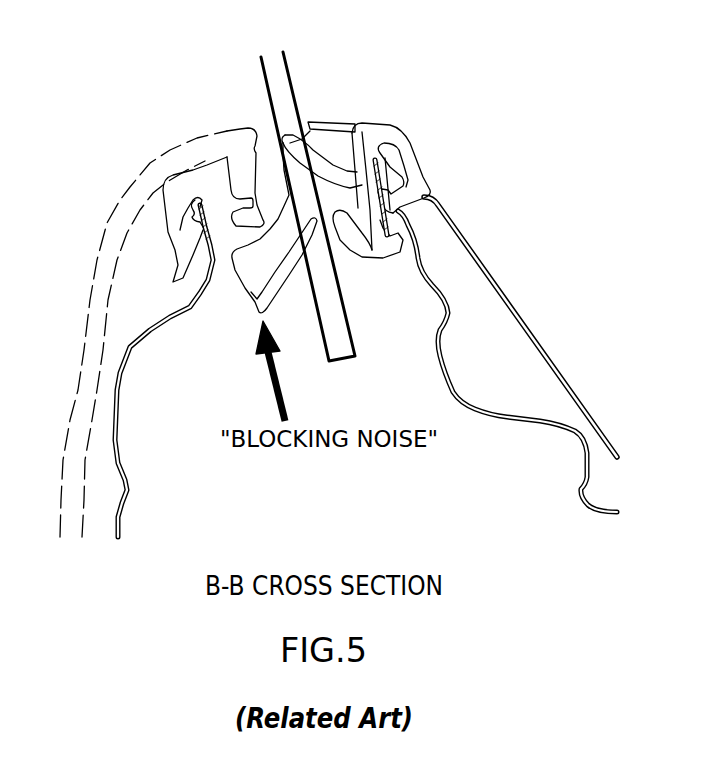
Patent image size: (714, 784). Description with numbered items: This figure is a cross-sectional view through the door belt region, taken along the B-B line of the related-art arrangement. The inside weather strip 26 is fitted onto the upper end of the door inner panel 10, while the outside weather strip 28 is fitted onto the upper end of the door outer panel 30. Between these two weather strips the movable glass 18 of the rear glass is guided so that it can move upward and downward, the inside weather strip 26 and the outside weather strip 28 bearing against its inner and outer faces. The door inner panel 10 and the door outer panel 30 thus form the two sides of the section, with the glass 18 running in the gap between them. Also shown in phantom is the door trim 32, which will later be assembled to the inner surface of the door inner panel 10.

The door inner panel 10 is at (118, 443).
The movable glass 18 is at (293, 92).
The inside weather strip 26 is at (236, 286).
The outside weather strip 28 is at (357, 257).
The door outer panel 30 is at (503, 290).
The door trim 32 is at (133, 188).